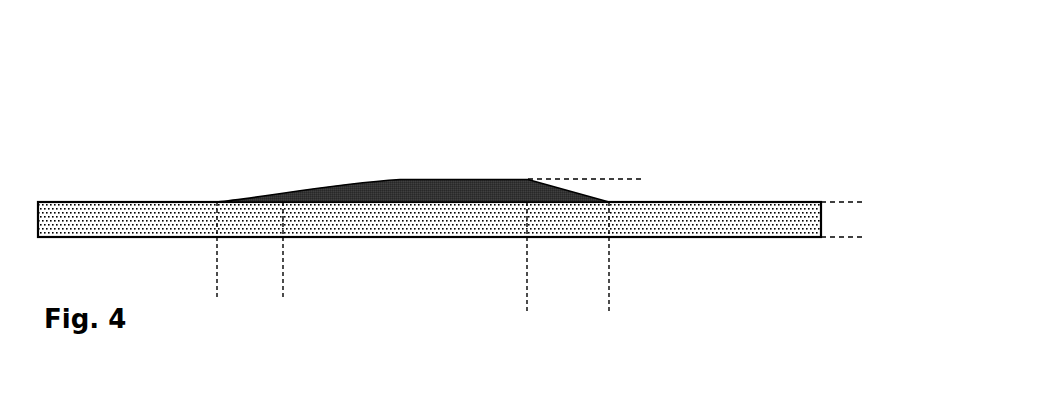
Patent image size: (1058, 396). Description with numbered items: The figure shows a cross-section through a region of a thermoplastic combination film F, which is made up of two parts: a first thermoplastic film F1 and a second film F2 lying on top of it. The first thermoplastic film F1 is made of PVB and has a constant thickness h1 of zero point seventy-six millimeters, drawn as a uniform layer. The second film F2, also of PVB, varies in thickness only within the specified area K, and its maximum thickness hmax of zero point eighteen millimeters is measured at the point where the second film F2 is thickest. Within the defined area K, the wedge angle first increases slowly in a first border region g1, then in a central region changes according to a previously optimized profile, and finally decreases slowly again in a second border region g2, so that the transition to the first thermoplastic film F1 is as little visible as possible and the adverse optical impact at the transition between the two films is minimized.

The thermoplastic combination film F is at (168, 169).
The first thermoplastic film F1 is at (658, 219).
The second film F2 is at (499, 188).
The specified area K is at (597, 270).
The first border region g1 is at (272, 293).
The second border region g2 is at (598, 294).
The thickness of the first thermoplastic film h1 is at (867, 268).
The maximum thickness of the second thermoplastic film hmax is at (642, 230).